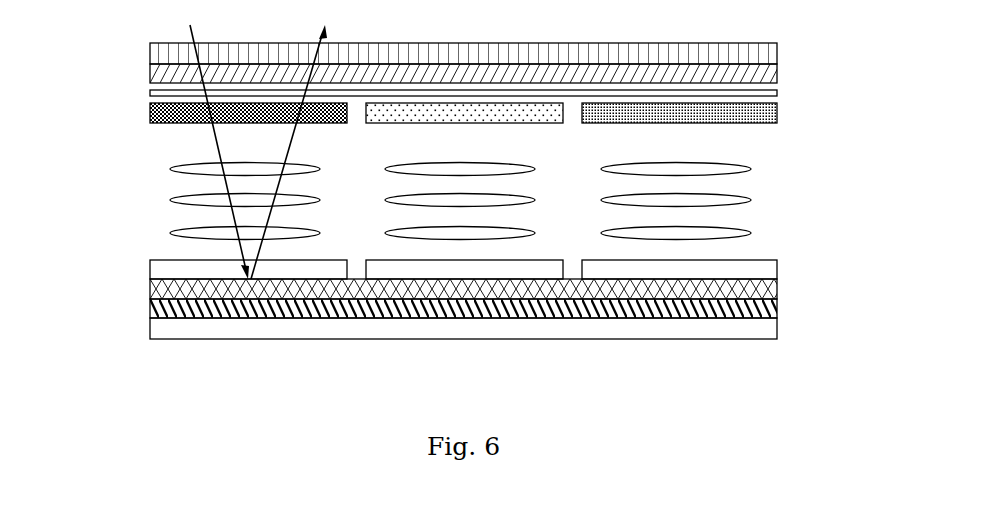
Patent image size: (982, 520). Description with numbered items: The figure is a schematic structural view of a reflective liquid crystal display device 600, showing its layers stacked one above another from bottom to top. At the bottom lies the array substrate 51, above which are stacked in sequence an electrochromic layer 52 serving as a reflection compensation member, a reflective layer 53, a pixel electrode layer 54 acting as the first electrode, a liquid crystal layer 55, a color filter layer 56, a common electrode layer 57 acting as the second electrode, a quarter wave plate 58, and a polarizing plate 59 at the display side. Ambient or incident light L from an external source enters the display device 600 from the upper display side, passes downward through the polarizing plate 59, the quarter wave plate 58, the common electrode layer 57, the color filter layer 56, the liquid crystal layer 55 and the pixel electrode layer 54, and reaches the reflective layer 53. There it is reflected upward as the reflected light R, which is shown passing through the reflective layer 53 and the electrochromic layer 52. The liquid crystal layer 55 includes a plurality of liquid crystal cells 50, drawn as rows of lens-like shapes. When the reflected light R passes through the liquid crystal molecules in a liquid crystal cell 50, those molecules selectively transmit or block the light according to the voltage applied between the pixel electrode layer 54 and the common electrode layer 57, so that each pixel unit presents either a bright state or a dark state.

The reflective liquid crystal display device 600 is at (90, 68).
The polarizing plate 59 is at (777, 53).
The quarter wave plate 58 is at (777, 75).
The common electrode layer 57 is at (777, 94).
The color filter layer 56 is at (777, 108).
The liquid crystal layer 55 is at (502, 186).
The liquid crystal cell 50 is at (300, 163).
The pixel electrode layer 54 is at (777, 267).
The reflective layer 53 is at (777, 291).
The electrochromic layer 52 is at (777, 314).
The array substrate 51 is at (777, 327).